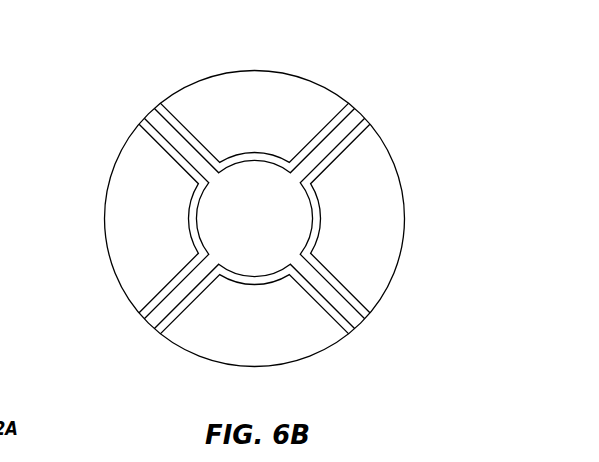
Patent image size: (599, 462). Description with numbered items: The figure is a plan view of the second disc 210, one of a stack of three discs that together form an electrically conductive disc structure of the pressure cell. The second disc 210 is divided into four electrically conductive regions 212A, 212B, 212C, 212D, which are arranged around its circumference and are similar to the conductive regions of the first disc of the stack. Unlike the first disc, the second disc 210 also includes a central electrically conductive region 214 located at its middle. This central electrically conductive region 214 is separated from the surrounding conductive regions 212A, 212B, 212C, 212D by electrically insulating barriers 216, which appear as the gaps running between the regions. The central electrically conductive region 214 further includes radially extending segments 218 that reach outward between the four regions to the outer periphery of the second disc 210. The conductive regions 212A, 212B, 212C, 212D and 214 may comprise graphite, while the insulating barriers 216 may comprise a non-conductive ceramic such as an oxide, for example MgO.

The second disc 210 is at (195, 60).
The electrically conductive region 212A is at (280, 97).
The electrically conductive region 212B is at (368, 220).
The electrically conductive region 212C is at (207, 338).
The electrically conductive region 212D is at (137, 213).
The central electrically conductive region 214 is at (270, 232).
The electrically insulating barriers 216 is at (330, 117).
The radially extending segments 218 is at (338, 138).